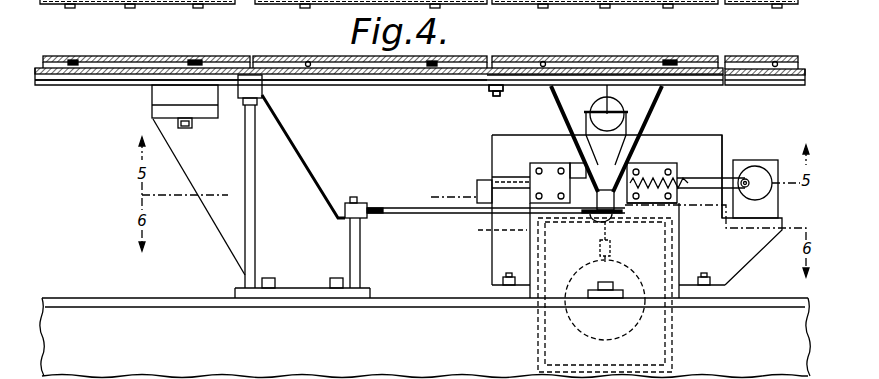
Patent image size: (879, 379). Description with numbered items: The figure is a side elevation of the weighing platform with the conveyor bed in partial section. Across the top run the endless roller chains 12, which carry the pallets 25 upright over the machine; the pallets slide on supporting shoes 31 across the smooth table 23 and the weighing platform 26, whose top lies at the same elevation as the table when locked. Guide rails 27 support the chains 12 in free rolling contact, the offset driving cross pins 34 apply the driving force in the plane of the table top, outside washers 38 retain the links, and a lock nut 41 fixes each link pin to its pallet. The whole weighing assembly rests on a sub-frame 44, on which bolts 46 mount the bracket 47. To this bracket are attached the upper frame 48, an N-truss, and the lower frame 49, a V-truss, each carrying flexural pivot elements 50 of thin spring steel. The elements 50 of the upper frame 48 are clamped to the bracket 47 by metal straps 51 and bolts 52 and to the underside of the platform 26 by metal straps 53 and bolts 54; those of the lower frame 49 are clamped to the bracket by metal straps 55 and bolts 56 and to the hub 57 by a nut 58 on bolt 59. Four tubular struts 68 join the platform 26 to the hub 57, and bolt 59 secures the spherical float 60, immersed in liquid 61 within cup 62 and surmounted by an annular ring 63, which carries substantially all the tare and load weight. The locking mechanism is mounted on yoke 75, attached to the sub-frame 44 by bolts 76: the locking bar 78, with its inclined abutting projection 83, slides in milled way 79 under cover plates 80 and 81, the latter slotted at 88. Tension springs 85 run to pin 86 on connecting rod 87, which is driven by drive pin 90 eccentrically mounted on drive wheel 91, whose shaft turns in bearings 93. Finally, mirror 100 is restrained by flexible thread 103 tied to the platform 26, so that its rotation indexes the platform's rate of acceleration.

The endless roller chains 12 is at (236, 6).
The table surface 23 is at (100, 75).
The pallets 25 is at (150, 56).
The weighing platform 26 is at (547, 72).
The guide rails 27 is at (52, 86).
The supporting shoes 31 is at (123, 66).
The driving cross pins 34 is at (80, 58).
The outside washers 38 is at (304, 9).
The lock nut 41 is at (134, 8).
The sub-frame 44 is at (440, 297).
The bolts 46 is at (335, 278).
The bracket 47 is at (225, 243).
The upper frame 48 is at (385, 86).
The lower frame 49 is at (418, 214).
The flexural pivot elements 50 is at (236, 79).
The metal straps 51 is at (263, 90).
The bolts 52 is at (272, 100).
The metal straps 53 is at (503, 90).
The bolts 54 is at (493, 96).
The metal straps 55 is at (366, 203).
The bolts 56 is at (352, 197).
The hub 57 is at (608, 170).
The nut 58 is at (613, 220).
The bolt 59 is at (612, 245).
The float 60 is at (635, 288).
The liquid 61 is at (672, 356).
The cup 62 is at (672, 332).
The annular ring 63 is at (492, 235).
The struts 68 is at (568, 116).
The yoke 75 is at (718, 135).
The bolts 76 is at (509, 273).
The locking bar 78 is at (597, 195).
The milled way 79 is at (480, 180).
The cover plate 80 is at (546, 163).
The cover plate 81 is at (665, 164).
The inclined abutting projection 83 is at (580, 163).
The tension springs 85 is at (676, 201).
The pin 86 is at (692, 189).
The connecting rod 87 is at (718, 180).
The slot 88 is at (640, 178).
The drive pin 90 is at (752, 167).
The drive wheel 91 is at (758, 176).
The bearings 93 is at (760, 218).
The light-reflecting mirror 100 is at (618, 104).
The flexible thread 103 is at (604, 98).